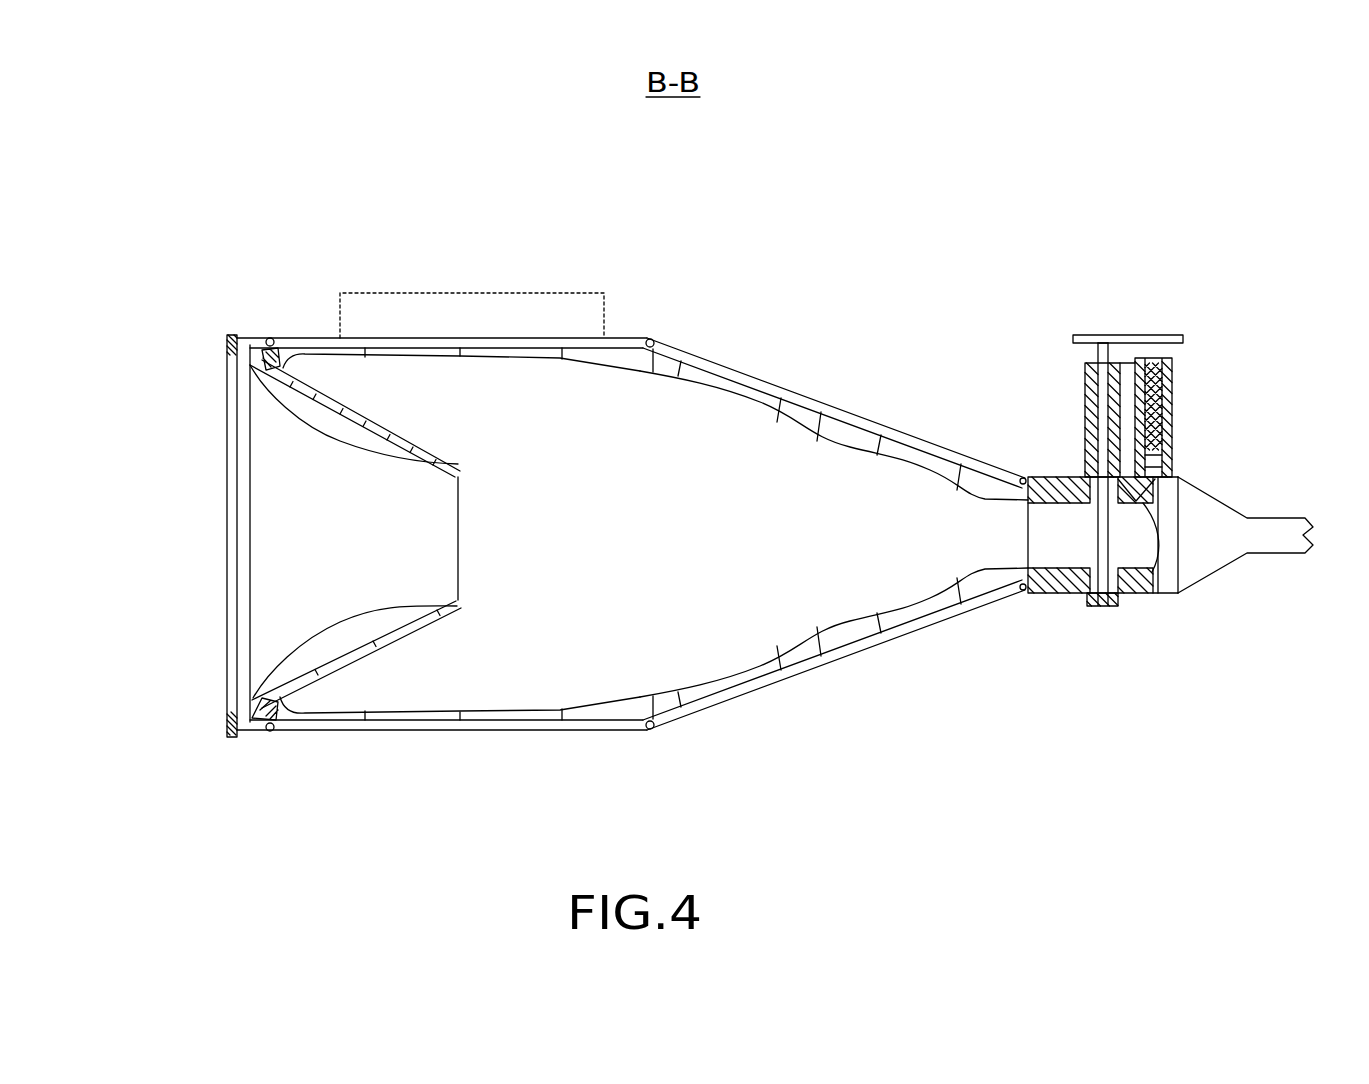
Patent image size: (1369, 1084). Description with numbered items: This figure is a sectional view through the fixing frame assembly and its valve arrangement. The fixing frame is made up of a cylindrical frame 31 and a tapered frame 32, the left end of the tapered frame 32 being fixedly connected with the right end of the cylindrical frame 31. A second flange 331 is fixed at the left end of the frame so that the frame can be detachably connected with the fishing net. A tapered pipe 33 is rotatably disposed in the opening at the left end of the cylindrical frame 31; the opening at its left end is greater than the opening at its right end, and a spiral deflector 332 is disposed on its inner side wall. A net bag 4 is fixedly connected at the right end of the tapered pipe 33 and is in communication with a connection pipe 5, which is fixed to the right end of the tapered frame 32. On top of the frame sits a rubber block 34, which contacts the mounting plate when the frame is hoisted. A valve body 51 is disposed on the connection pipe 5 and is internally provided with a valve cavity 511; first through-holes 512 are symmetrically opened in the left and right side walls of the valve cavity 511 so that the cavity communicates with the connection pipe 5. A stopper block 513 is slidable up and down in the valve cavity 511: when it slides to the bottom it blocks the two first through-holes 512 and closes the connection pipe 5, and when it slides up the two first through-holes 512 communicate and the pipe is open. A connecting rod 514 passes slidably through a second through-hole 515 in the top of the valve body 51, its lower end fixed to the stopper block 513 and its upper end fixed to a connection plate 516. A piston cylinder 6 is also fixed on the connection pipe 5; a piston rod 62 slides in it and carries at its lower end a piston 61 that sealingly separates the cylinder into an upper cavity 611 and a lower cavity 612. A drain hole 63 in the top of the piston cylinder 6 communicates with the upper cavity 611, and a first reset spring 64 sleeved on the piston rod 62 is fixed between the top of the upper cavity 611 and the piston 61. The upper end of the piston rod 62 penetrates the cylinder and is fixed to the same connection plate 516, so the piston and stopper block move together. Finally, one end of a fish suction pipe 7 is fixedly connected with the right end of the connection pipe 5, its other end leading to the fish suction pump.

The cylindrical frame 31 is at (435, 735).
The tapered frame 32 is at (755, 705).
The tapered pipe 33 is at (378, 430).
The second flange 331 is at (228, 341).
The spiral deflector 332 is at (335, 430).
The rubber block 34 is at (460, 318).
The net bag 4 is at (830, 408).
The connection pipe 5 is at (1043, 475).
The valve body 51 is at (1105, 606).
The valve cavity 511 is at (1140, 598).
The first through-holes 512 is at (1092, 555).
The stopper block 513 is at (1098, 523).
The connecting rod 514 is at (1085, 368).
The second through-hole 515 is at (1105, 362).
The connection plate 516 is at (1150, 360).
The piston cylinder 6 is at (1216, 362).
The piston 61 is at (1172, 455).
The upper cavity 611 is at (1125, 420).
The lower cavity 612 is at (1172, 470).
The piston rod 62 is at (1175, 380).
The drain hole 63 is at (1135, 345).
The first reset spring 64 is at (1172, 408).
The fish suction pipe 7 is at (1274, 553).